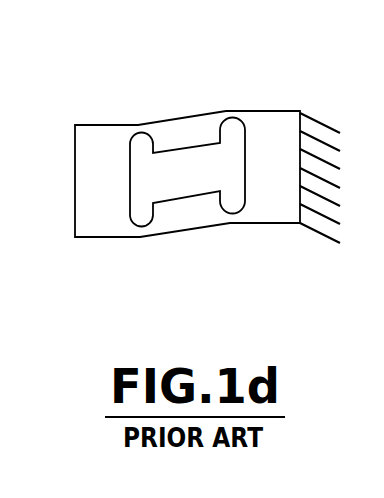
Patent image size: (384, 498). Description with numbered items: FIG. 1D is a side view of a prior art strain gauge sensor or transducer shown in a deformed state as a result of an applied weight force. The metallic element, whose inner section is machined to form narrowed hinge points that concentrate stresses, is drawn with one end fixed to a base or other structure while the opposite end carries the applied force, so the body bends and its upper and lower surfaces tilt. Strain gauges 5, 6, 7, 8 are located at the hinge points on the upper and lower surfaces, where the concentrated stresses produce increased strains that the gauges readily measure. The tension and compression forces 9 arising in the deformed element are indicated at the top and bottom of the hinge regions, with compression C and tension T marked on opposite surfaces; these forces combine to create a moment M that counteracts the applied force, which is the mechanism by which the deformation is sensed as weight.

The strain gauge 5 is at (228, 112).
The strain gauge 6 is at (138, 123).
The strain gauge 7 is at (139, 238).
The strain gauge 8 is at (238, 224).
The tension and compression forces 9 is at (222, 65).
The compression region C is at (183, 183).
The tension region T is at (184, 178).
The moment M is at (58, 171).